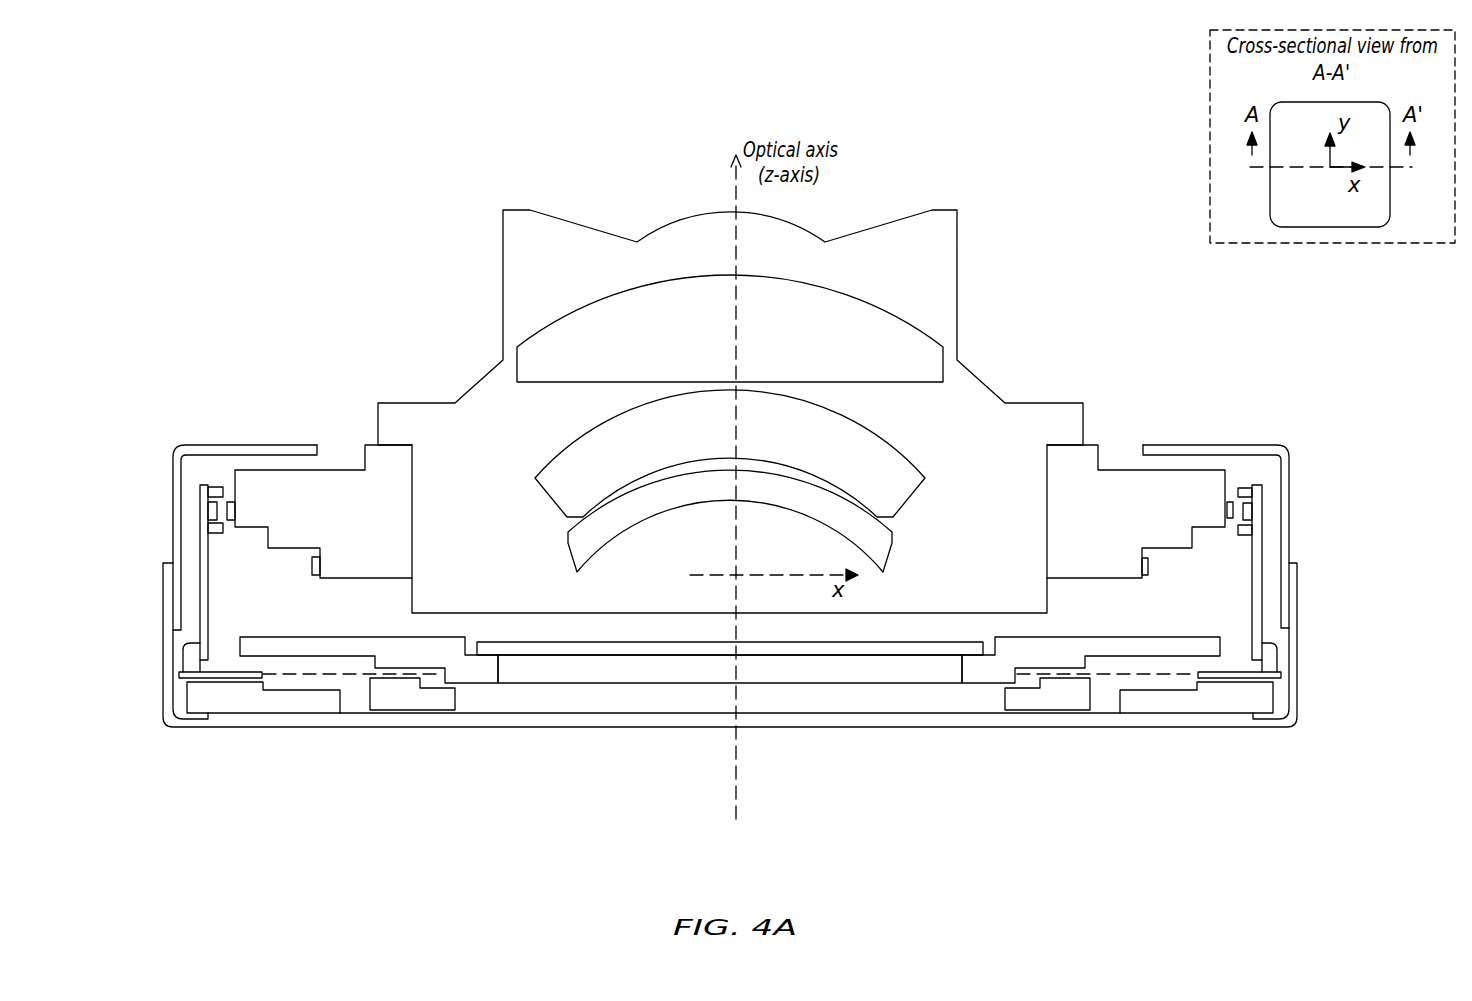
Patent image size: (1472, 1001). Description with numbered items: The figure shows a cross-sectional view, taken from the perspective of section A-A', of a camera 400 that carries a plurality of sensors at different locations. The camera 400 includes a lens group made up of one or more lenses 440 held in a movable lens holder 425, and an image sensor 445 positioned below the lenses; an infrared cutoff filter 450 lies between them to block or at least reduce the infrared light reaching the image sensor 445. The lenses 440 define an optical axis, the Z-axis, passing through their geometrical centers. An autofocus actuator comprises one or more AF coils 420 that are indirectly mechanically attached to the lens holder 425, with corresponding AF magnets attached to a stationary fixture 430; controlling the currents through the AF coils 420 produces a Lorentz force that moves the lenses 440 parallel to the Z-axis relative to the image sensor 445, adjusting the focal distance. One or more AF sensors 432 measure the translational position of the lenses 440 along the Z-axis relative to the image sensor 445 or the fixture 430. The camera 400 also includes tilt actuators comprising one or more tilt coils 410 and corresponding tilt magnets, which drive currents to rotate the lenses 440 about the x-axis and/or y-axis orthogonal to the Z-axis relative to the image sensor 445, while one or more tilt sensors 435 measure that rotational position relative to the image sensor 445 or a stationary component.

The camera 400 is at (195, 122).
The tilt coil 410 is at (213, 528).
The AF coil 420 is at (300, 533).
The lens holder 425 is at (423, 415).
The fixture 430 is at (200, 485).
The AF sensor 432 is at (1183, 577).
The tilt sensor 435 is at (1250, 510).
The lenses 440 is at (568, 543).
The image sensor 445 is at (598, 690).
The infrared cutoff filter 450 is at (918, 648).